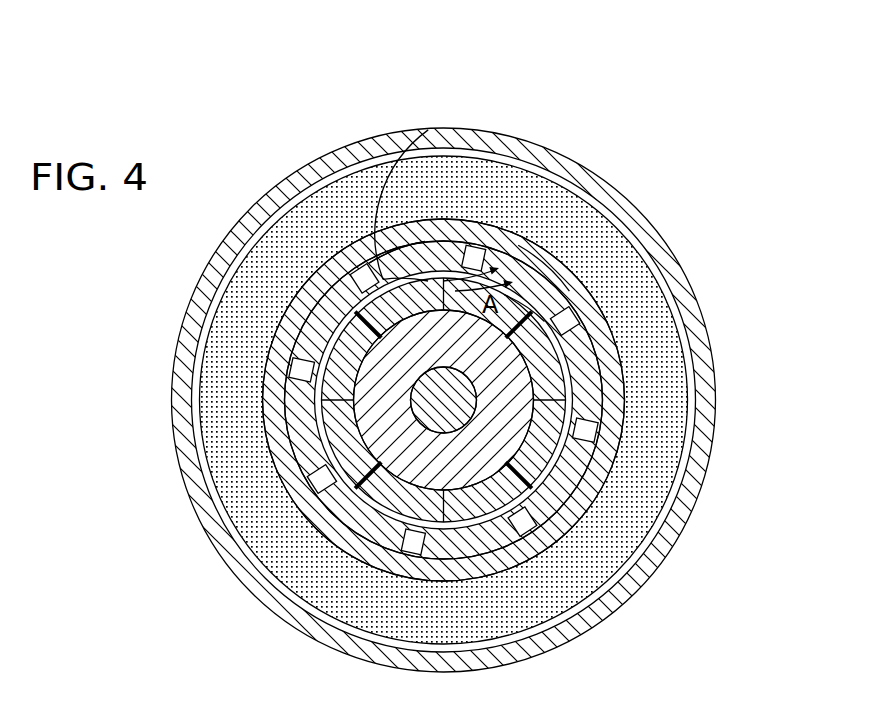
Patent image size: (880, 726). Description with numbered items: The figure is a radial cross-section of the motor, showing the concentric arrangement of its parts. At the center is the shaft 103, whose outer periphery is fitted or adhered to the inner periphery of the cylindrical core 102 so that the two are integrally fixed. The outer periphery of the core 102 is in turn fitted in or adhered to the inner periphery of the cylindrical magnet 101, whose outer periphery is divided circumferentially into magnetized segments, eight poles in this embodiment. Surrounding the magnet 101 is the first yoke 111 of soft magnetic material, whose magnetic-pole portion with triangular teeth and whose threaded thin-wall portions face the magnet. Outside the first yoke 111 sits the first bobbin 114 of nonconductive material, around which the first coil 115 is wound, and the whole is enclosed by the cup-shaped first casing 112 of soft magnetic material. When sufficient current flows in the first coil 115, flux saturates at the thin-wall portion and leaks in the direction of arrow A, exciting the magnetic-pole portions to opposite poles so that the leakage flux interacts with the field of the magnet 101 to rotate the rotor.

The first casing 112 is at (660, 250).
The first coil 115 is at (633, 290).
The first bobbin 114 is at (612, 338).
The first yoke 111 is at (596, 372).
The magnet 101 is at (533, 402).
The core 102 is at (513, 415).
The shaft 103 is at (457, 420).